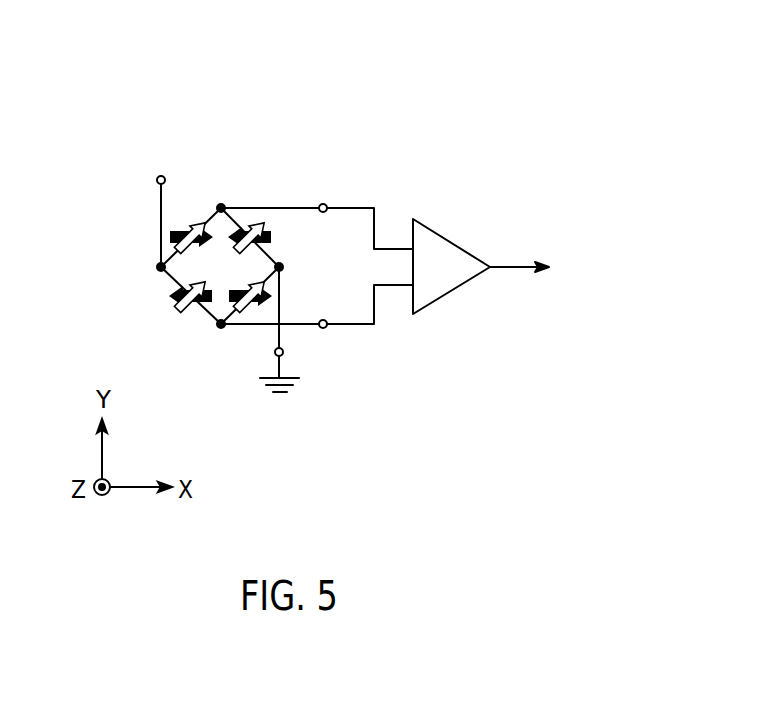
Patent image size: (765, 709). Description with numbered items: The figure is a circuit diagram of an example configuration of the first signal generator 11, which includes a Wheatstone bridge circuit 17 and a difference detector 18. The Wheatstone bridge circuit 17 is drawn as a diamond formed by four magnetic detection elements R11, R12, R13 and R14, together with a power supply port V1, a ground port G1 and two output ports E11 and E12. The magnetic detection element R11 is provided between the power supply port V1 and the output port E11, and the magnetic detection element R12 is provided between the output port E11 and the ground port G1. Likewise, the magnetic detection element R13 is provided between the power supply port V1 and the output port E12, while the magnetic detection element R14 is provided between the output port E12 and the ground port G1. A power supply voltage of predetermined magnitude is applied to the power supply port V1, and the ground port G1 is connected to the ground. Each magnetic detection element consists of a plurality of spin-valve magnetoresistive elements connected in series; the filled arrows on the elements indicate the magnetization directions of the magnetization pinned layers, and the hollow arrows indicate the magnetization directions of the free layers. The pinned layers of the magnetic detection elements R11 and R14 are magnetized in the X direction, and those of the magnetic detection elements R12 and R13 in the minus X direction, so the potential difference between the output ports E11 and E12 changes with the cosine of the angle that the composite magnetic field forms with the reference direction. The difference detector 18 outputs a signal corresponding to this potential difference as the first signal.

The first signal generator 11 is at (312, 100).
The Wheatstone bridge circuit 17 is at (252, 196).
The difference detector 18 is at (452, 238).
The magnetic detection element R11 is at (191, 227).
The magnetic detection element R12 is at (269, 237).
The magnetic detection element R13 is at (189, 309).
The magnetic detection element R14 is at (271, 295).
The power supply port V1 is at (160, 206).
The ground port G1 is at (272, 329).
The output port E11 is at (280, 192).
The output port E12 is at (281, 344).